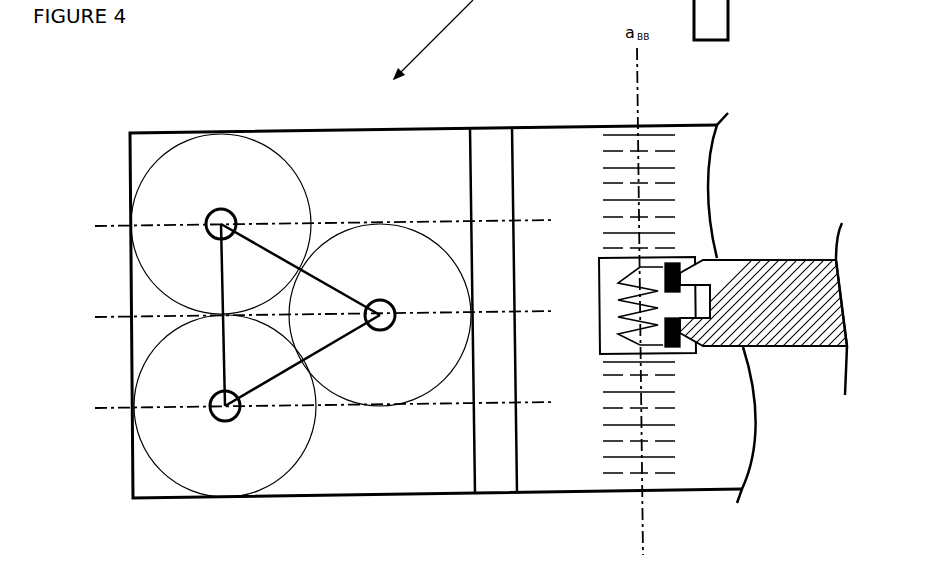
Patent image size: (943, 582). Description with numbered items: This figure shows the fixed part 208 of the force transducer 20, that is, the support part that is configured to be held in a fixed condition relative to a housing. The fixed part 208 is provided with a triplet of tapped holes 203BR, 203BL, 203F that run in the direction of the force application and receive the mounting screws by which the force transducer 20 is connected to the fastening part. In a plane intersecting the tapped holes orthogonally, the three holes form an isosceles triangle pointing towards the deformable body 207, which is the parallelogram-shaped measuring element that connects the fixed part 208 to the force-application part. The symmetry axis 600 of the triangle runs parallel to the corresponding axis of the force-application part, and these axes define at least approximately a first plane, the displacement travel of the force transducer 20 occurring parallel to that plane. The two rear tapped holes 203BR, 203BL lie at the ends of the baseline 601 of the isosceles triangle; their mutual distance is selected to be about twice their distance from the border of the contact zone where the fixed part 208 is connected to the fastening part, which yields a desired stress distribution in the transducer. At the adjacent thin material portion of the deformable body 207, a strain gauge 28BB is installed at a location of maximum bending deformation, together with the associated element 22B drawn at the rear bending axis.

The force transducer 20 is at (293, 114).
The fixed part 208 is at (170, 185).
The deformable body 207 is at (557, 177).
The tapped hole 203BR is at (221, 224).
The tapped hole 203F is at (380, 315).
The tapped hole 203BL is at (225, 406).
The symmetry axis 600 is at (281, 313).
The baseline 601 is at (220, 297).
The strain gauge 28BB is at (625, 302).
The positioning arm 22B is at (755, 259).